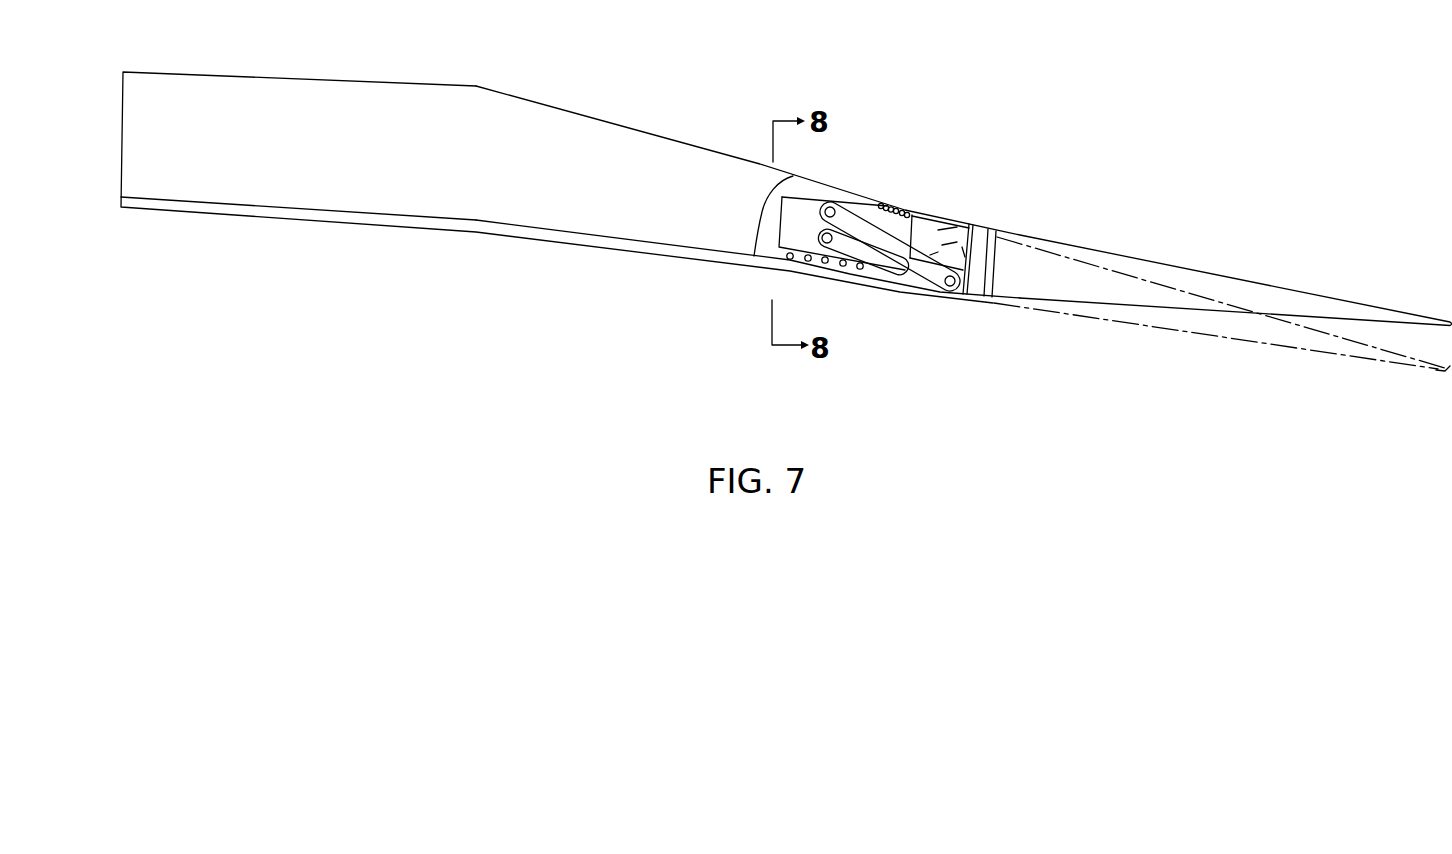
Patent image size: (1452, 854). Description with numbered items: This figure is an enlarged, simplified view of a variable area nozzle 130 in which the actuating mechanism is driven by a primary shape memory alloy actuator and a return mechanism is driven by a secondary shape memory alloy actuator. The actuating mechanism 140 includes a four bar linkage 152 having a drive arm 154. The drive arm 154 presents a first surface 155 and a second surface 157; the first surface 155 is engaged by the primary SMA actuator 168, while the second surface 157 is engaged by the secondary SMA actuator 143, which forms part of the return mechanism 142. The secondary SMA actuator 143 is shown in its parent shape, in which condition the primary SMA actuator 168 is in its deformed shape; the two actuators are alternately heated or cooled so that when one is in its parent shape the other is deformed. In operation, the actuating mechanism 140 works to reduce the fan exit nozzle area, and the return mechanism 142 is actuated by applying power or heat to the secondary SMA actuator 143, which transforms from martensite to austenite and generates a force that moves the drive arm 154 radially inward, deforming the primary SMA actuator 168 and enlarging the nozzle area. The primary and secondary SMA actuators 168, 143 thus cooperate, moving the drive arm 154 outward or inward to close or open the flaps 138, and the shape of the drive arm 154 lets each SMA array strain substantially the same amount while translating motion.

The variable area nozzle 130 is at (951, 144).
The flaps 138 is at (1087, 278).
The actuating mechanism 140 is at (847, 179).
The return mechanism 142 is at (962, 226).
The secondary SMA actuator 143 is at (926, 205).
The four bar linkage 152 is at (931, 303).
The drive arm 154 is at (793, 234).
The first surface 155 is at (818, 264).
The second surface 157 is at (893, 204).
The primary SMA actuator 168 is at (842, 277).